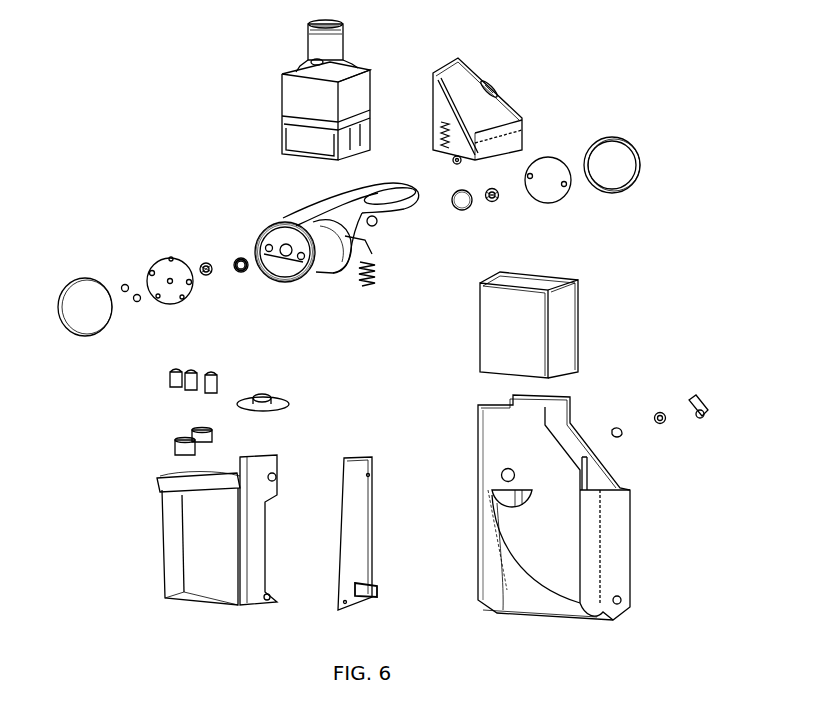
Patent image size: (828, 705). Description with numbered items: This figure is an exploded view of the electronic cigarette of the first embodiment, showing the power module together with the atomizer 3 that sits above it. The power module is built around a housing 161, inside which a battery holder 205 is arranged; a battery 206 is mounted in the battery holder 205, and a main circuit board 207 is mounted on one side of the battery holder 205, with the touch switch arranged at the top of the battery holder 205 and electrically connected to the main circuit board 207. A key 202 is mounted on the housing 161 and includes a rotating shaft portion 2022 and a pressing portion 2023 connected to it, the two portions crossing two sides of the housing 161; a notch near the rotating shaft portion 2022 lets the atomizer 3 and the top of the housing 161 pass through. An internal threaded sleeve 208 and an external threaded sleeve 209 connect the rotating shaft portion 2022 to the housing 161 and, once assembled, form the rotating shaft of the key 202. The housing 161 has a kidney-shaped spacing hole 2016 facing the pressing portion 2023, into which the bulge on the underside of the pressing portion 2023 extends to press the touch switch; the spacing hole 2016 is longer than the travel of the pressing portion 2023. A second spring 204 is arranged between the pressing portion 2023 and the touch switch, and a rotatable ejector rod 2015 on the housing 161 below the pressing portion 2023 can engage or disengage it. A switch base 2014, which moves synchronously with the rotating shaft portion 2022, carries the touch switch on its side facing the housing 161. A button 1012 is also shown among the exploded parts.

The cartridge 3 is at (272, 90).
The pressing portion 2023 is at (314, 213).
The key 202 is at (262, 222).
The rotating shaft portion 2022 is at (287, 283).
The internal threaded sleeve 208 is at (241, 273).
The external threaded sleeve 209 is at (207, 277).
The second spring 204 is at (368, 286).
The switch base 2014 is at (170, 305).
The spacing hole 2016 is at (490, 86).
The battery 206 is at (579, 326).
The ejector rod 2015 is at (699, 424).
The housing 161 is at (508, 523).
The main circuit board 207 is at (364, 541).
The battery holder 205 is at (160, 548).
The button 1012 is at (270, 398).